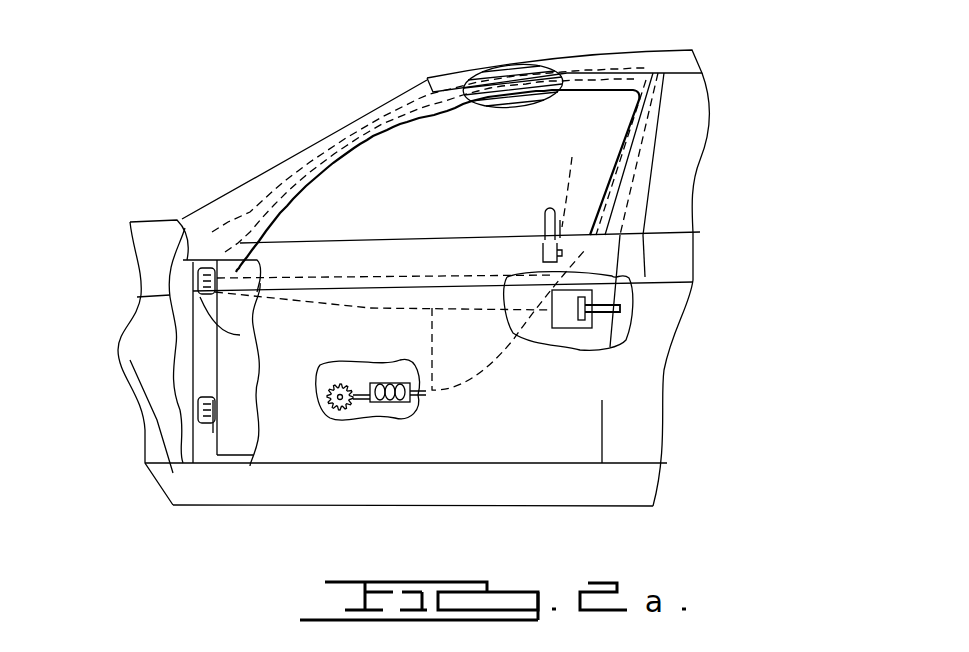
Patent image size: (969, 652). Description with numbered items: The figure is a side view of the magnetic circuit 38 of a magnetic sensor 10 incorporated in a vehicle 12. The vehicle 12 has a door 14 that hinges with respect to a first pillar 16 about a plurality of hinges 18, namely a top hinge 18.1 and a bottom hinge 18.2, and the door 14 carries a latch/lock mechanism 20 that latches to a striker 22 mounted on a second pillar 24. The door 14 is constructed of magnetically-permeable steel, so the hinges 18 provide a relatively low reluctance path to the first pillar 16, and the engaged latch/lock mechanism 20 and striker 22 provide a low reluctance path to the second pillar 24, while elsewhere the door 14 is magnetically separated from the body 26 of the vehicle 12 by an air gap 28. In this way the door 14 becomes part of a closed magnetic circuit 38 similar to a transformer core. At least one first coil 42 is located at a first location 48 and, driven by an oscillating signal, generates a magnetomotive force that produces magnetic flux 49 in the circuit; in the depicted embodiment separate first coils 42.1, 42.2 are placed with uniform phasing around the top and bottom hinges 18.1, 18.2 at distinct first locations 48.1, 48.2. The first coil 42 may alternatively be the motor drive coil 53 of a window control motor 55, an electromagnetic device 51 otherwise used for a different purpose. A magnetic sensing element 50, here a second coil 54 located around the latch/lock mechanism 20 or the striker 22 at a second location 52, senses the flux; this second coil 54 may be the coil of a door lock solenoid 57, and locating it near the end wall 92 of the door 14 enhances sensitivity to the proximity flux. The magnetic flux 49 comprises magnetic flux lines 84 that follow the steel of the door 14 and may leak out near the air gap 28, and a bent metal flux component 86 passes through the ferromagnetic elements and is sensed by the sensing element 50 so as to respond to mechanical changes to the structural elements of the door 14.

The magnetic sensor 10 is at (146, 90).
The vehicle 12 is at (692, 62).
The door 14 is at (576, 452).
The first pillar 16 is at (162, 317).
The hinges 18 is at (277, 358).
The top hinge 18.1 is at (234, 273).
The bottom hinge 18.2 is at (233, 443).
The latch/lock mechanism 20 is at (553, 333).
The striker 22 is at (580, 273).
The second pillar 24 is at (642, 328).
The body 26 is at (475, 493).
The air gap 28 is at (498, 79).
The magnetic circuit 38 is at (742, 145).
The first coil 42 is at (331, 374).
The first coil 42.1 is at (240, 335).
The first coil 42.2 is at (222, 373).
The first location 48 is at (228, 354).
The first location 48.1 is at (186, 282).
The first location 48.2 is at (188, 427).
The magnetic flux 49 is at (400, 317).
The magnetic sensing element 50 is at (590, 350).
The electromagnetic device 51 is at (536, 232).
The second location 52 is at (533, 211).
The motor drive coil 53 is at (407, 410).
The second coil 54 is at (629, 261).
The window control motor 55 is at (420, 400).
The door lock solenoid 57 is at (569, 177).
The magnetic flux lines 84 is at (480, 275).
The bent metal flux component 86 is at (372, 308).
The end wall 92 is at (618, 292).